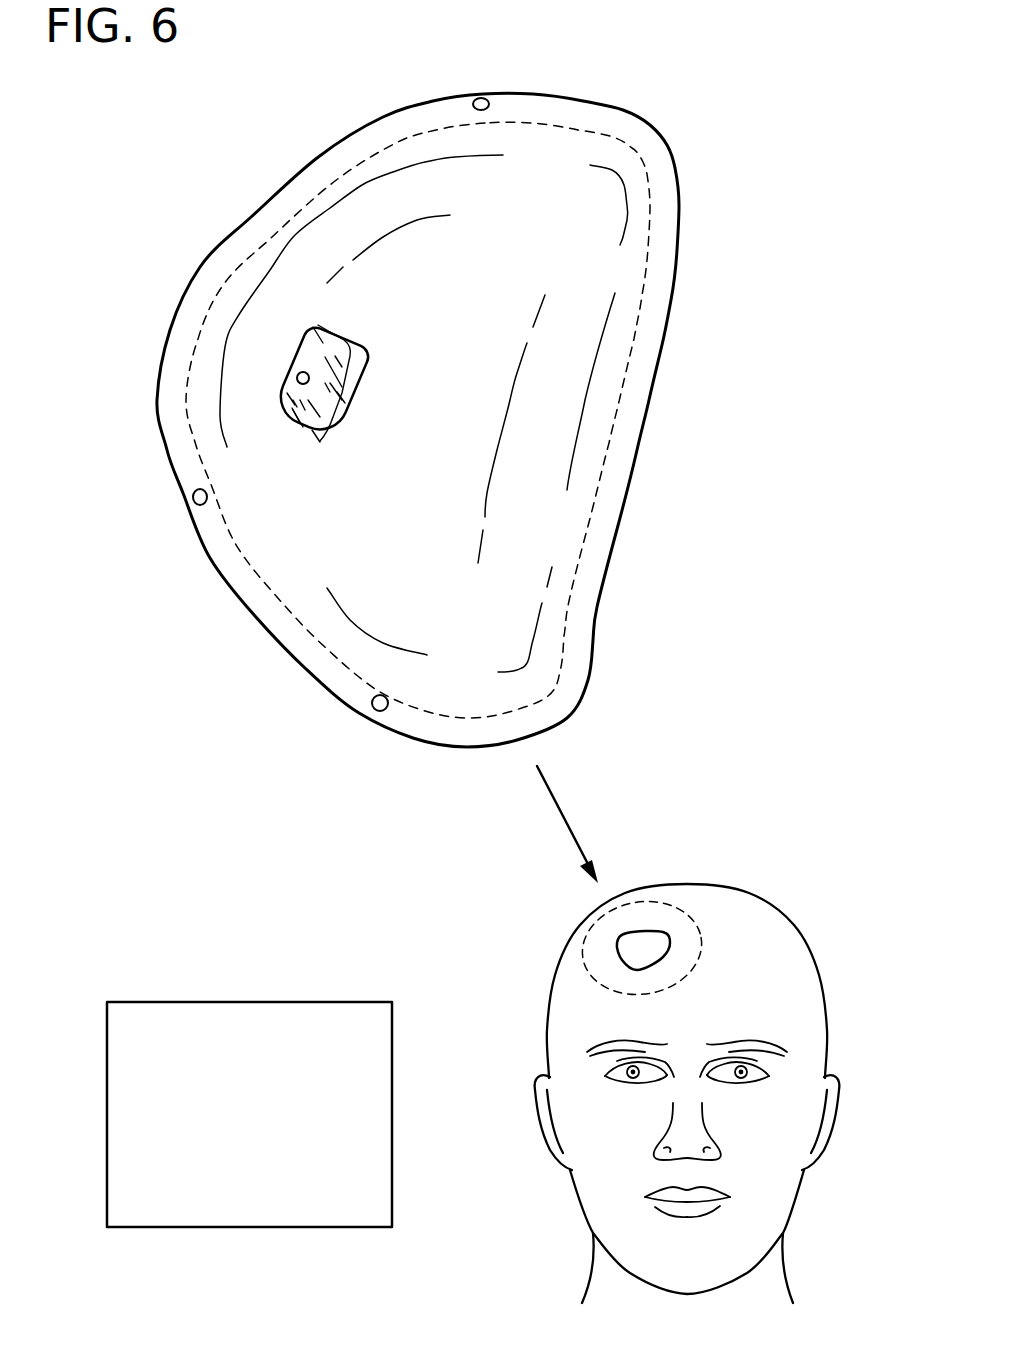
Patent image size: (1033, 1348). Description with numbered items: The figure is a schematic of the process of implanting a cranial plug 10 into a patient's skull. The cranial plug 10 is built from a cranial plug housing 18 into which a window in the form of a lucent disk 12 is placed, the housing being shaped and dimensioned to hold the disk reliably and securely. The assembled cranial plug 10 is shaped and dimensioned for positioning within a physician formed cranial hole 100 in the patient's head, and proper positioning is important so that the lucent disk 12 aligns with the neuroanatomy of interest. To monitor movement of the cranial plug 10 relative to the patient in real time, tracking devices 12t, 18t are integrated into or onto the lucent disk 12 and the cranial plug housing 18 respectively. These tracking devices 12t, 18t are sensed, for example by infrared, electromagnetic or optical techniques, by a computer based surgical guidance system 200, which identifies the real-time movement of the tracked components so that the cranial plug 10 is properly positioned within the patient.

The cranial plug 10 is at (688, 123).
The lucent disk 12 is at (338, 320).
The tracking device 12t is at (300, 376).
The cranial plug housing 18 is at (223, 542).
The tracking device 18t is at (482, 98).
The cranial hole 100 is at (690, 917).
The computer based surgical guidance system 200 is at (270, 1128).